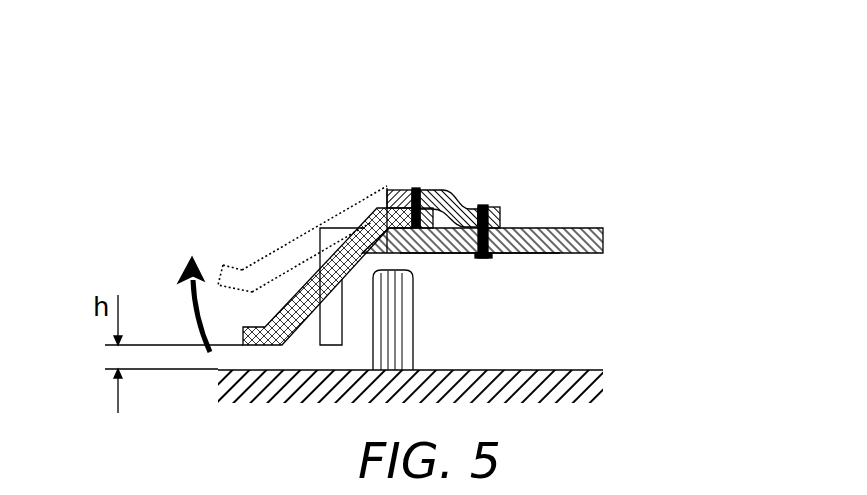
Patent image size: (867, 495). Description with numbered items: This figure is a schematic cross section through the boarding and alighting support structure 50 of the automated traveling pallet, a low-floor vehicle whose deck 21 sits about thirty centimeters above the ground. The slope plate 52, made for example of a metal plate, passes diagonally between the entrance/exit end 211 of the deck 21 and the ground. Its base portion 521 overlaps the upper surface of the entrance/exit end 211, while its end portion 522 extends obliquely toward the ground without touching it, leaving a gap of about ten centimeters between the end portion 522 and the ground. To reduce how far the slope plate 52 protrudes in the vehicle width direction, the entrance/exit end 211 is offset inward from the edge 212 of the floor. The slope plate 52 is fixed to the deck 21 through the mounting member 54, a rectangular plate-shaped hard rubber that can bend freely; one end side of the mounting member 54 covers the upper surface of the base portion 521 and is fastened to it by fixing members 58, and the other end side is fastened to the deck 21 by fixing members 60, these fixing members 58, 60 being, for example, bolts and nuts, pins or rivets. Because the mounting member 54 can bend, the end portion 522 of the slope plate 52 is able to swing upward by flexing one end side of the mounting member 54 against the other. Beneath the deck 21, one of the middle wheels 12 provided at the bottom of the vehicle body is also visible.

The boarding and alighting support structure 50 is at (342, 150).
The slope plate 52 is at (308, 286).
The base portion 521 is at (397, 186).
The end portion 522 is at (180, 283).
The mounting member 54 is at (450, 190).
The fixing members 58 is at (421, 186).
The fixing members 60 is at (492, 205).
The deck 21 is at (567, 227).
The entrance/exit end 211 is at (425, 256).
The edge 212 is at (322, 225).
The middle wheels 12 is at (413, 337).